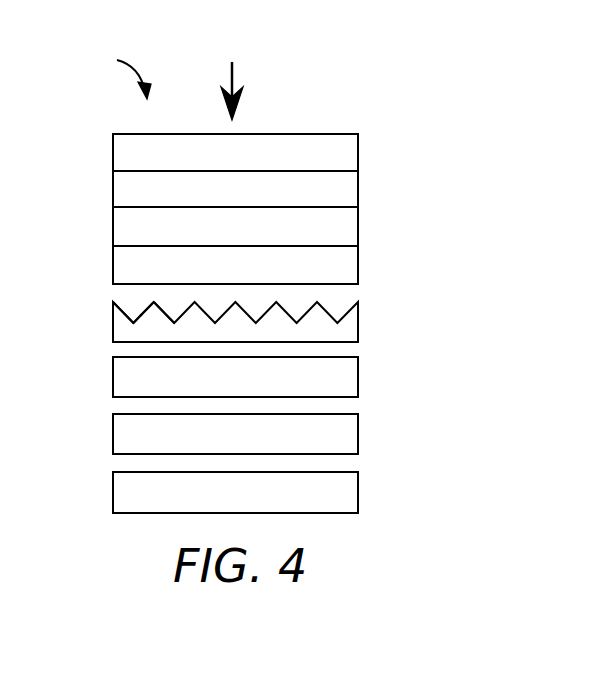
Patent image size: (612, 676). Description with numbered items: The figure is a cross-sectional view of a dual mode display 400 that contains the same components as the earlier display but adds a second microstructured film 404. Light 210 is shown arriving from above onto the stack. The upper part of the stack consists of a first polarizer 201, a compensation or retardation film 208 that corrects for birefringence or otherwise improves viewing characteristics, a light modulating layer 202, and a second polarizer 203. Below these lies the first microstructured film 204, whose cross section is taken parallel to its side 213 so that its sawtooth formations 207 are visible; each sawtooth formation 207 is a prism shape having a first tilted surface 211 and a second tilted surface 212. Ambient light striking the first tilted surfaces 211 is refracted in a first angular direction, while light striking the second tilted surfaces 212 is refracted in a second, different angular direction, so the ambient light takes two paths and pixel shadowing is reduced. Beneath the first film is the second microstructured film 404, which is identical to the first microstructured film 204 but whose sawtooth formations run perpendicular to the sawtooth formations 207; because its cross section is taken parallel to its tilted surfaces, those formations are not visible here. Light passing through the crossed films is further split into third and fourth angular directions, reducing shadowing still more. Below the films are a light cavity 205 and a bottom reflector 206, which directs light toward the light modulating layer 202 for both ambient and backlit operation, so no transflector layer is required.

The display 400 is at (109, 70).
The incident light 210 is at (232, 70).
The first polarizer 201 is at (358, 153).
The compensation or retardation film 208 is at (358, 190).
The light modulating layer 202 is at (358, 227).
The second polarizer 203 is at (358, 263).
The microstructured film 204 is at (358, 323).
The first tilted surface 211 is at (146, 307).
The sawtooth formations 207 is at (137, 317).
The side 213 is at (122, 325).
The second tilted surface 212 is at (163, 310).
The second microstructured film 404 is at (358, 379).
The light cavity 205 is at (358, 436).
The bottom reflector 206 is at (358, 485).